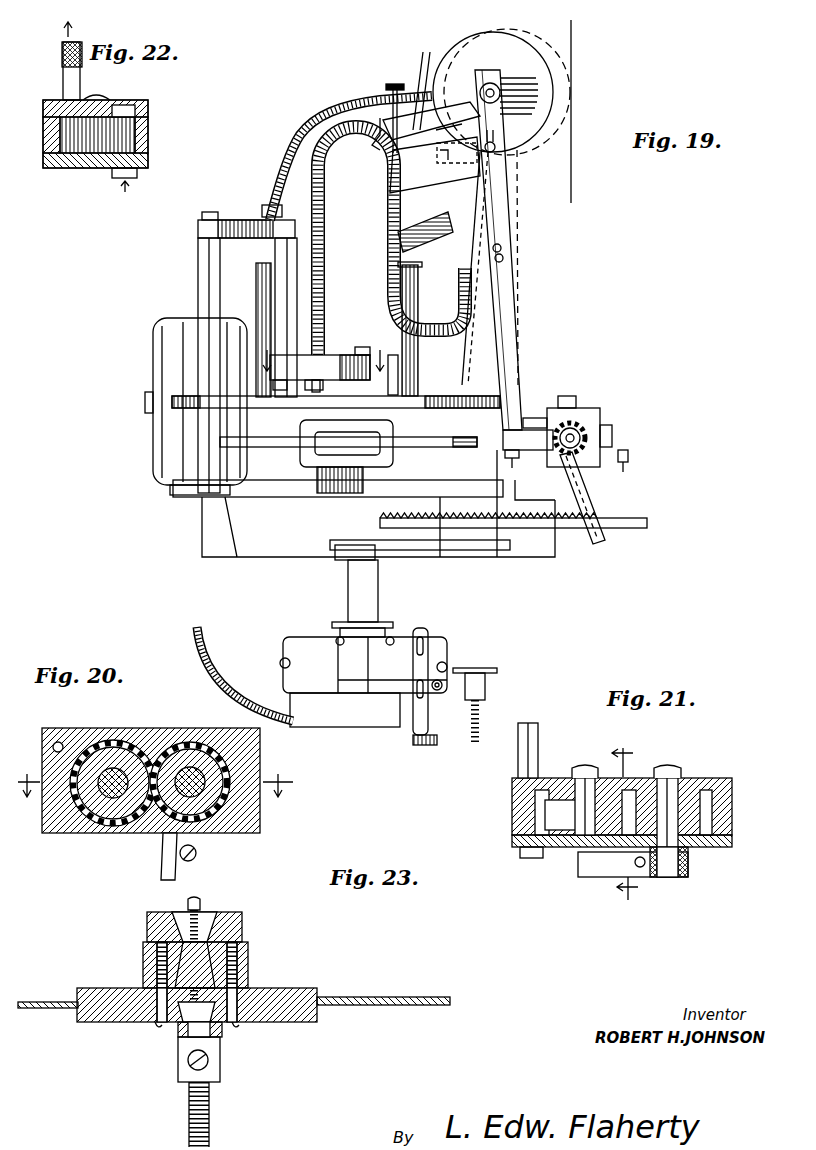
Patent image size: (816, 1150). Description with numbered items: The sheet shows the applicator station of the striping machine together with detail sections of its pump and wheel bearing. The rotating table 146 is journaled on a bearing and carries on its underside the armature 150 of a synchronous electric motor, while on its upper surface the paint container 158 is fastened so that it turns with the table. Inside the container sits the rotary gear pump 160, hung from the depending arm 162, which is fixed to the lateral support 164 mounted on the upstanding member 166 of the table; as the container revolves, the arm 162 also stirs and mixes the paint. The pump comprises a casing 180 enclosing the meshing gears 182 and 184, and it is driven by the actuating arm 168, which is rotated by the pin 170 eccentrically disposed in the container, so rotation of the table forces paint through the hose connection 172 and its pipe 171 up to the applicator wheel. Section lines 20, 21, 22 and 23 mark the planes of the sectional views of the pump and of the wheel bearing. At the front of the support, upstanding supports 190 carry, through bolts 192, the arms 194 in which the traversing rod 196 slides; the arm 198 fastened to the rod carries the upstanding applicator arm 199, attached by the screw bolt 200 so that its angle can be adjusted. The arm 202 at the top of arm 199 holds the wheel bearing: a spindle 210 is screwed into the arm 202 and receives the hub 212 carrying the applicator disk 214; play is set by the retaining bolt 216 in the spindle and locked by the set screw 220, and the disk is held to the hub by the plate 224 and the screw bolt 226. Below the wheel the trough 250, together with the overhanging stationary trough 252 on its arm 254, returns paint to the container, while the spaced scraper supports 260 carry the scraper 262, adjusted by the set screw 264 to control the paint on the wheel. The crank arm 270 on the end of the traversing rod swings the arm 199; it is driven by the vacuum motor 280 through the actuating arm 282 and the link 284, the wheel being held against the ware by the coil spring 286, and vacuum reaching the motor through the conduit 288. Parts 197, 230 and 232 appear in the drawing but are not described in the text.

In FIG. 19, the section line 20- 20 is at (327, 353).
In FIG. 20, the section line 21- 21 is at (155, 779).
In FIG. 21, the section line 22— 22 is at (625, 824).
In FIG. 19, the section line 23— 23 is at (377, 93).
In FIG. 19, the table 146 is at (470, 392).
In FIG. 19, the armature 150 is at (390, 440).
In FIG. 19, the paint container 158 is at (420, 280).
In FIG. 19, the rotary pump 160 is at (330, 357).
In FIG. 19, the depending arm 162 is at (262, 300).
In FIG. 19, the lateral support 164 is at (236, 222).
In FIG. 19, the upstanding member 166 is at (200, 304).
In FIG. 19, the actuating arm 168 is at (398, 372).
In FIG. 20, the actuating arm 168 is at (163, 852).
In FIG. 21, the actuating arm 168 is at (633, 821).
In FIG. 19, the pin 170 is at (316, 392).
In FIG. 20, the pin 170 is at (195, 858).
In FIG. 19, the pipe 171 is at (485, 258).
In FIG. 19, the hose connection 172 is at (430, 325).
In FIG. 22, the casing 180 is at (150, 115).
In FIG. 20, the casing 180 is at (200, 731).
In FIG. 21, the casing 180 is at (700, 780).
In FIG. 20, the gear 182 is at (208, 812).
In FIG. 21, the gear 182 is at (732, 812).
In FIG. 22, the gear 184 is at (92, 140).
In FIG. 20, the gear 184 is at (82, 810).
In FIG. 21, the gear 184 is at (560, 830).
In FIG. 19, the upstanding supports 190 is at (525, 450).
In FIG. 19, the bolts 192 is at (535, 418).
In FIG. 19, the arms 194 is at (606, 426).
In FIG. 19, the traversing rod 196 is at (585, 440).
In FIG. 19, the set screw 197 is at (630, 457).
In FIG. 19, the arm 198 is at (507, 455).
In FIG. 19, the applicator arm 199 is at (520, 292).
In FIG. 19, the screw bolt 200 is at (497, 469).
In FIG. 23, the arm 202 is at (155, 913).
In FIG. 23, the spindle 210 is at (190, 905).
In FIG. 23, the hub 212 is at (140, 975).
In FIG. 19, the applicator disk 214 is at (512, 140).
In FIG. 23, the applicator disk 214 is at (44, 1000).
In FIG. 23, the retaining bolt 216 is at (218, 1042).
In FIG. 23, the set screw 220 is at (215, 913).
In FIG. 23, the plate 224 is at (278, 1020).
In FIG. 23, the screw bolt 226 is at (157, 1026).
In FIG. 19, the threaded shaft / hose 230 is at (288, 156).
In FIG. 23, the threaded shaft / hose 230 is at (189, 1115).
In FIG. 19, the motor 232 is at (190, 455).
In FIG. 19, the trough 250 is at (426, 147).
In FIG. 19, the stationary trough 252 is at (415, 232).
In FIG. 19, the arm 254 is at (270, 205).
In FIG. 19, the scraper supports 260 is at (426, 83).
In FIG. 19, the scraper 262 is at (445, 158).
In FIG. 19, the set screw 264 is at (397, 79).
In FIG. 19, the crank arm 270 is at (590, 488).
In FIG. 19, the vacuum motor 280 is at (388, 686).
In FIG. 19, the actuating arm 282 is at (350, 556).
In FIG. 19, the link 284 is at (445, 552).
In FIG. 19, the coil spring 286 is at (450, 517).
In FIG. 19, the conduit 288 is at (212, 645).